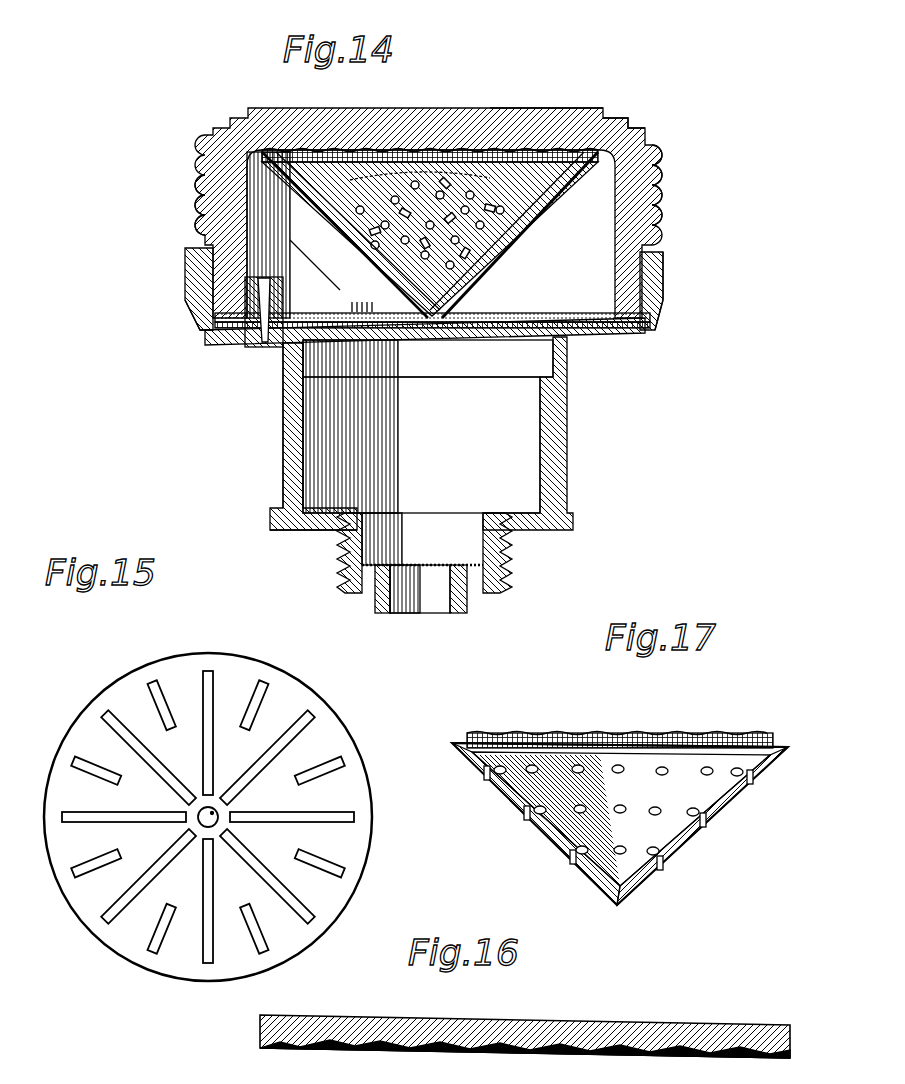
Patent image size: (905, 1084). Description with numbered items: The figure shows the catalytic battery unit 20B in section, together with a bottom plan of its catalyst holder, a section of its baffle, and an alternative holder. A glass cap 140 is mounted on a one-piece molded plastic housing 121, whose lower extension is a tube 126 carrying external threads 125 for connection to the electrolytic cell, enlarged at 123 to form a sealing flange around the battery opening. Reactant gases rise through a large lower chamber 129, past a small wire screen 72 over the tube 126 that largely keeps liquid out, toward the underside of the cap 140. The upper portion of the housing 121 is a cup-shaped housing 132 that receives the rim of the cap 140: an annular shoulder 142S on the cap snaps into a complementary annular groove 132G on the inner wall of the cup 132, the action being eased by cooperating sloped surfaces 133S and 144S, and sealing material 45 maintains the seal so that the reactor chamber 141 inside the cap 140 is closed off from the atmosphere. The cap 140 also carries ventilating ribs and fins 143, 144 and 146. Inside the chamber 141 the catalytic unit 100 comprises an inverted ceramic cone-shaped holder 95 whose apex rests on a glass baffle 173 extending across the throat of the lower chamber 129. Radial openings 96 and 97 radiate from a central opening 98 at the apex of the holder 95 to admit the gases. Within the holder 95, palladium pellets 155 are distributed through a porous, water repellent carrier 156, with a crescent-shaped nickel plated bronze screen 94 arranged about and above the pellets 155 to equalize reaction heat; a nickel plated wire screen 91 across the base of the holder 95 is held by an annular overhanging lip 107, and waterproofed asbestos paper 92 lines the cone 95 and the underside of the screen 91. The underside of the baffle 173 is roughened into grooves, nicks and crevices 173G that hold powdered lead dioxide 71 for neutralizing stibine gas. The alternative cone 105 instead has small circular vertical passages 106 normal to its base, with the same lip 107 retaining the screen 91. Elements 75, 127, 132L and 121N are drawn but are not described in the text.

In FIG. 14, the glass cap 140 is at (283, 108).
In FIG. 14, the ventilating ribs and fins 143 is at (203, 143).
In FIG. 14, the annular overhanging lip-shaped extension 107 is at (648, 140).
In FIG. 17, the annular overhanging lip-shaped extension 107 is at (778, 745).
In FIG. 14, the ventilating ribs and fins 146 is at (620, 118).
In FIG. 14, the catalytic battery unit 20B is at (553, 106).
In FIG. 14, the reactor chamber 141 is at (245, 228).
In FIG. 14, the carrier 156 is at (352, 150).
In FIG. 14, the nickel plated bronze screen 94 is at (440, 108).
In FIG. 14, the radial openings 96 is at (537, 162).
In FIG. 15, the radial openings 96 is at (335, 812).
In FIG. 14, the waterproofed asbestos paper 92 is at (547, 167).
In FIG. 14, the nickel plated wire screen 91 is at (500, 108).
In FIG. 17, the nickel plated wire screen 91 is at (676, 738).
In FIG. 14, the palladium pellets 155 is at (368, 260).
In FIG. 14, the passage 75 is at (362, 300).
In FIG. 14, the cone-shaped holder 95 is at (470, 313).
In FIG. 15, the cone-shaped holder 95 is at (265, 668).
In FIG. 14, the glass baffle 173 is at (492, 340).
In FIG. 16, the glass baffle 173 is at (552, 1023).
In FIG. 14, the flange 127 is at (598, 348).
In FIG. 14, the annular groove 132G is at (200, 280).
In FIG. 14, the cup-shaped housing 132 is at (200, 316).
In FIG. 14, the sealing material 45 is at (222, 336).
In FIG. 14, the ventilating ribs and fins 144 is at (660, 212).
In FIG. 14, the sloped surface 133S is at (655, 252).
In FIG. 14, the collar lip 132L is at (665, 262).
In FIG. 14, the annular protrusion or shoulder 142S is at (665, 287).
In FIG. 14, the sloped surface 144S is at (660, 303).
In FIG. 14, the housing 121 is at (568, 400).
In FIG. 14, the catalytic unit 100 is at (428, 426).
In FIG. 14, the lower chamber 129 is at (540, 432).
In FIG. 14, the housing neck 121N is at (283, 460).
In FIG. 14, the sealing flange 123 is at (300, 530).
In FIG. 14, the external threads 125 is at (512, 560).
In FIG. 14, the wire screen 72 is at (445, 565).
In FIG. 14, the tube 126 is at (470, 608).
In FIG. 15, the radial openings 97 is at (330, 760).
In FIG. 15, the central opening 98 is at (215, 808).
In FIG. 17, the cone 105 is at (510, 824).
In FIG. 17, the vertical passages 106 is at (735, 792).
In FIG. 16, the grooves, nicks and crevices 173G is at (738, 1040).
In FIG. 16, the lead dioxide 71 is at (575, 1058).